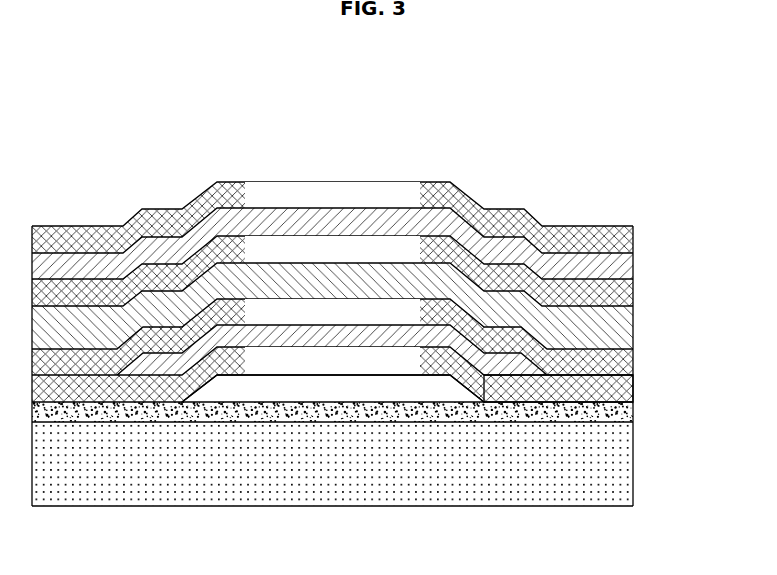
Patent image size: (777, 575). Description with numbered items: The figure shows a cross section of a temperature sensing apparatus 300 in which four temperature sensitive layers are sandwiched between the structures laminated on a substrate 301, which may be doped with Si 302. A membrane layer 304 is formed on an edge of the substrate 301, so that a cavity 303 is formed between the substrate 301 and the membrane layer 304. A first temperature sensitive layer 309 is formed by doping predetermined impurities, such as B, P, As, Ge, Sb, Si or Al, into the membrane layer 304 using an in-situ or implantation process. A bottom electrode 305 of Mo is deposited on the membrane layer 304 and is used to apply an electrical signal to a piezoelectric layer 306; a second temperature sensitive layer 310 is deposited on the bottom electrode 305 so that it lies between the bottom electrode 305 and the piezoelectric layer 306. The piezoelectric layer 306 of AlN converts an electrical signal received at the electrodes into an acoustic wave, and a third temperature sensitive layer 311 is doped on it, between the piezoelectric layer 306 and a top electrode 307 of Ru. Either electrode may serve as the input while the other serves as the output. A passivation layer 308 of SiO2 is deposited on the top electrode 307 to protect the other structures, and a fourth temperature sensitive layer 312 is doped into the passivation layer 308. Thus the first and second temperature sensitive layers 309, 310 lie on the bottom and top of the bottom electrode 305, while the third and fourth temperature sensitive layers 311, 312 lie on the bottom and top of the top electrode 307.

The temperature sensing apparatus 300 is at (490, 146).
The substrate 301 is at (378, 486).
The Si 302 is at (420, 488).
The cavity 303 is at (251, 394).
The membrane layer 304 is at (638, 376).
The bottom electrode 305 is at (512, 368).
The piezoelectric layer 306 is at (638, 307).
The top electrode 307 is at (638, 254).
The passivation layer 308 is at (638, 227).
The first temperature sensitive layer 309 is at (592, 395).
The second temperature sensitive layer 310 is at (625, 359).
The third temperature sensitive layer 311 is at (627, 293).
The fourth temperature sensitive layer 312 is at (583, 233).